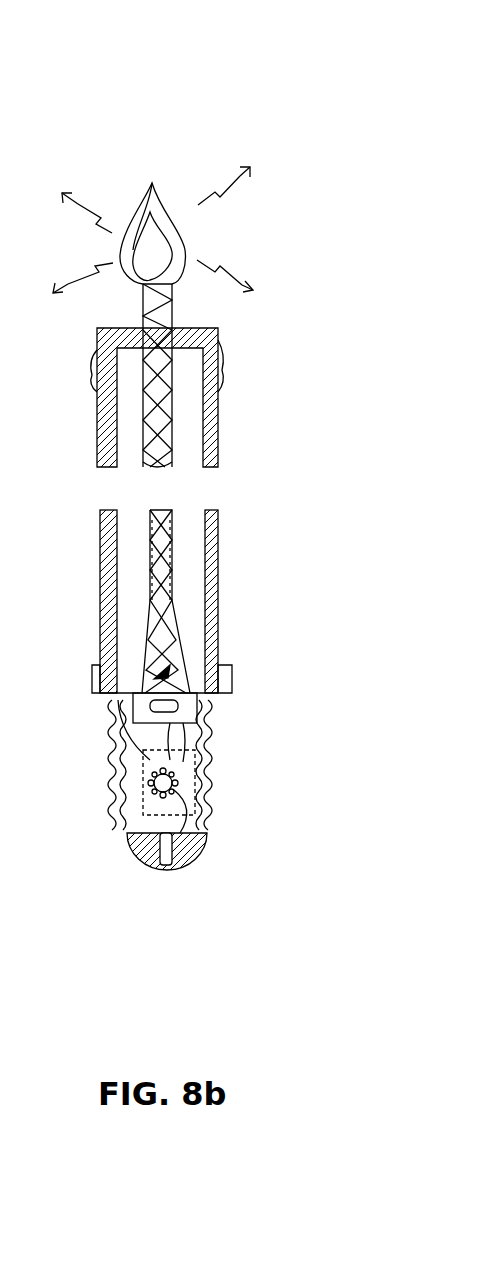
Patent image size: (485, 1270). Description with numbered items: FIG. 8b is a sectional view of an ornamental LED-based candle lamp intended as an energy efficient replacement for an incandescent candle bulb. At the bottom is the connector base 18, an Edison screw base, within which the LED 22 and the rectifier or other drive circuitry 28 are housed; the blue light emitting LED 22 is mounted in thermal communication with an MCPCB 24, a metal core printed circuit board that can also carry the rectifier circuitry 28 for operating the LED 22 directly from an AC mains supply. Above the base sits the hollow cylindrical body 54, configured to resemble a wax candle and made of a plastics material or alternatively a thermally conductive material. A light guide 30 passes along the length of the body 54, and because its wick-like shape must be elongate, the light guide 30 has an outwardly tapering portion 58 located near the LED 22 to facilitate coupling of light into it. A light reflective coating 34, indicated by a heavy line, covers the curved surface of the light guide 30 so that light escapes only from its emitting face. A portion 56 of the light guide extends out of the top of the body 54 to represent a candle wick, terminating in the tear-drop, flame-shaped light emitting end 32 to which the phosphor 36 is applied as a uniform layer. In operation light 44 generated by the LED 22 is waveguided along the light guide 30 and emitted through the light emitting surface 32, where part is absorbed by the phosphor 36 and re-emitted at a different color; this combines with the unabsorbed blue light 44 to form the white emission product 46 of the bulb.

The emission product 46 is at (83, 207).
The light emitting end 32 is at (150, 240).
The phosphor 36 is at (178, 250).
The portion of the light guide 56 is at (156, 310).
The light guide 30 is at (157, 383).
The hollow cylindrical body 54 is at (210, 448).
The light reflective coating 34 is at (167, 534).
The light 44 is at (156, 572).
The outwardly tapering portion 58 is at (160, 672).
The LED 22 is at (167, 704).
The MCPCB 24 is at (182, 762).
The rectifier circuitry 28 is at (165, 795).
The connector base 18 is at (200, 815).